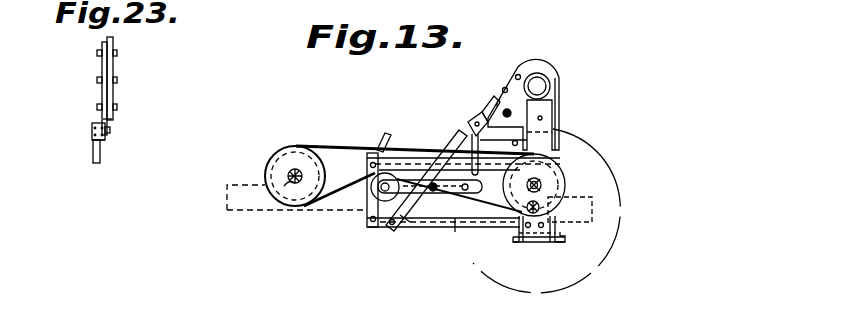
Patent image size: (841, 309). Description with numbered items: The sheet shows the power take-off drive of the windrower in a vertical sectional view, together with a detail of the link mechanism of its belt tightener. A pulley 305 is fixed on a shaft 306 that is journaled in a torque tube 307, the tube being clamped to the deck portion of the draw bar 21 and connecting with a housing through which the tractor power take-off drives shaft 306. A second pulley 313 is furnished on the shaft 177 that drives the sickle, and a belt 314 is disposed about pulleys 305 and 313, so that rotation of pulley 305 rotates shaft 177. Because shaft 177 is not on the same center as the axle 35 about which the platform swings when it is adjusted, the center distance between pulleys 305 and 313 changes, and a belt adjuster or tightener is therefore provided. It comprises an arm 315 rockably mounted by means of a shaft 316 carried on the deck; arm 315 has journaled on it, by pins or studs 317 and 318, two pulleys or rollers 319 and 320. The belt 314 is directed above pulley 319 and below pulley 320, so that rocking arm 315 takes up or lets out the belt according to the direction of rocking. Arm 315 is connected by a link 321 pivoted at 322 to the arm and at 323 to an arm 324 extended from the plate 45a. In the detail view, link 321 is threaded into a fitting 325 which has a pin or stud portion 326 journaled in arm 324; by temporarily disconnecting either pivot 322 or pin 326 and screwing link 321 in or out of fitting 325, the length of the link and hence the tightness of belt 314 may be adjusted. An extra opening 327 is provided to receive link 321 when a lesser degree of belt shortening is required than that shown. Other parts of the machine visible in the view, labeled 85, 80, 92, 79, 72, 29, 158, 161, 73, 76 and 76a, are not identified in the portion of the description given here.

In FIG. 23, the plate 45a is at (114, 66).
In FIG. 23, the pivot 323 is at (91, 131).
In FIG. 13, the pivot 323 is at (478, 112).
In FIG. 23, the arm 324 is at (109, 118).
In FIG. 13, the arm 324 is at (492, 98).
In FIG. 23, the pin or stud portion 326 is at (111, 131).
In FIG. 23, the fitting 325 is at (93, 137).
In FIG. 23, the link 321 is at (93, 159).
In FIG. 13, the link 321 is at (468, 130).
In FIG. 13, the pulley 305 is at (273, 160).
In FIG. 13, the shaft 306 is at (287, 176).
In FIG. 13, the torque tube 307 is at (285, 186).
In FIG. 13, the draw bar 21 is at (226, 205).
In FIG. 13, the belt 314 is at (352, 147).
In FIG. 13, the arm 315 is at (407, 165).
In FIG. 13, the pin or stud 318 is at (466, 220).
In FIG. 13, the pulley or roller 319 is at (372, 216).
In FIG. 13, the bolt holes 85 is at (380, 225).
In FIG. 13, the pin or stud 317 is at (380, 197).
In FIG. 13, the shaft 316 is at (448, 226).
In FIG. 13, the extra opening 327 is at (478, 190).
In FIG. 13, the diagonal link 80 is at (424, 226).
In FIG. 13, the pivot 92 is at (408, 228).
In FIG. 13, the pulley or roller 320 is at (455, 233).
In FIG. 13, the bracket stub 79 is at (420, 160).
In FIG. 13, the pivot 322 is at (466, 150).
In FIG. 13, the bracket plate 72 is at (546, 66).
In FIG. 13, the shaft bearing 29 is at (551, 84).
In FIG. 13, the pin 158 is at (512, 112).
In FIG. 13, the pin 161 is at (543, 118).
In FIG. 13, the wheel 73 is at (556, 142).
In FIG. 13, the shaft 177 is at (576, 162).
In FIG. 13, the pulley 313 is at (547, 186).
In FIG. 13, the axle 35 is at (559, 210).
In FIG. 13, the base bracket 76 is at (566, 234).
In FIG. 13, the base flange 76a is at (516, 243).